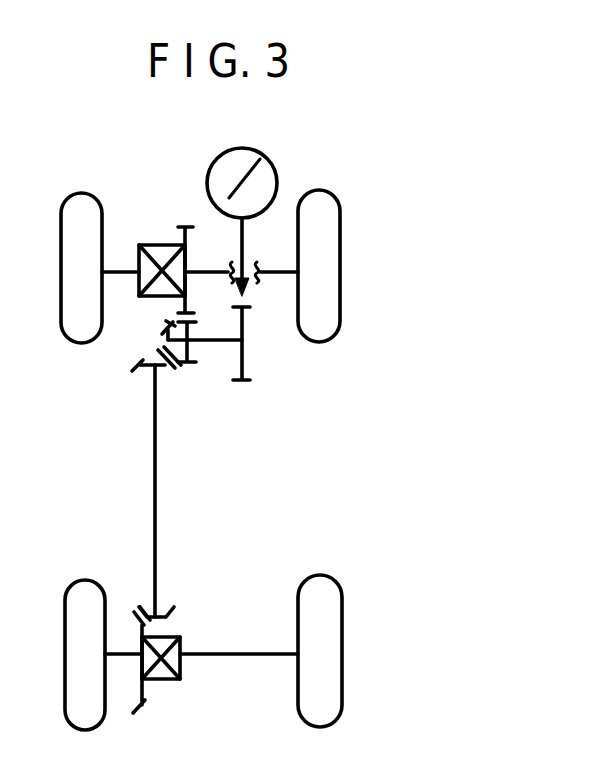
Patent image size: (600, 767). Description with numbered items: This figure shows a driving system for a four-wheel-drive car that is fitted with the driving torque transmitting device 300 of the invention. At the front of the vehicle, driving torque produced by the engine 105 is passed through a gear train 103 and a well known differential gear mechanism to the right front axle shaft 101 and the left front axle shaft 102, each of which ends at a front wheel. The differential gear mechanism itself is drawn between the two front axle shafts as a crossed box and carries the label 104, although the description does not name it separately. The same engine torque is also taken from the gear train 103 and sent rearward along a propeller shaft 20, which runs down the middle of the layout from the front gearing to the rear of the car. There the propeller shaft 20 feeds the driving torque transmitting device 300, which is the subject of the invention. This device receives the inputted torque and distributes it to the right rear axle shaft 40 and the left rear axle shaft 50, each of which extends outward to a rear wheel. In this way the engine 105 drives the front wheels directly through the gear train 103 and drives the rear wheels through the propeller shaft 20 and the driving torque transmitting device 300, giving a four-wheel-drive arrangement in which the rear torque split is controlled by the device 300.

The propeller shaft 20 is at (157, 584).
The right rear axle shaft 40 is at (247, 654).
The left rear axle shaft 50 is at (120, 653).
The right front axle shaft 101 is at (287, 272).
The left front axle shaft 102 is at (117, 275).
The gear train 103 is at (207, 376).
The front differential 104 is at (152, 245).
The engine 105 is at (281, 184).
The driving torque transmitting device 300 is at (163, 681).